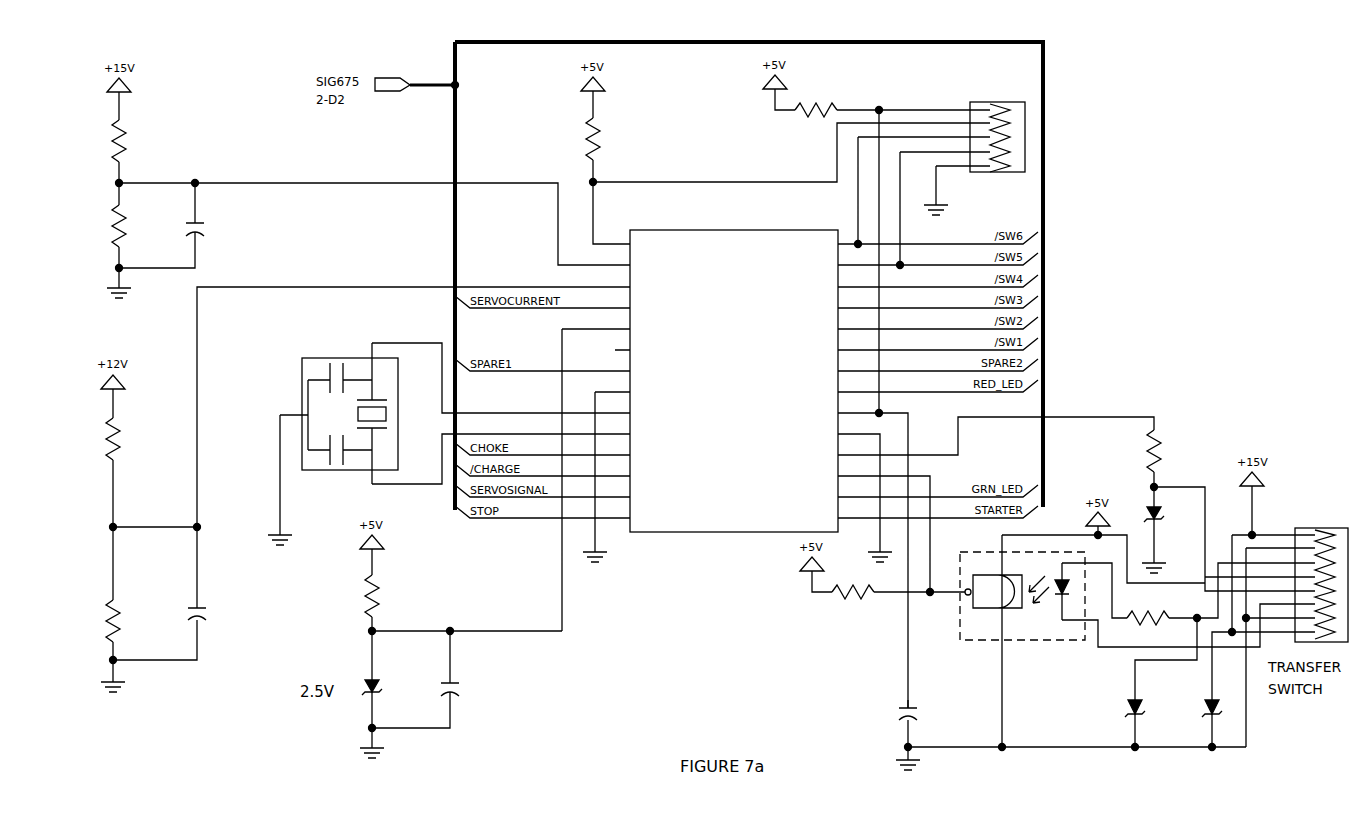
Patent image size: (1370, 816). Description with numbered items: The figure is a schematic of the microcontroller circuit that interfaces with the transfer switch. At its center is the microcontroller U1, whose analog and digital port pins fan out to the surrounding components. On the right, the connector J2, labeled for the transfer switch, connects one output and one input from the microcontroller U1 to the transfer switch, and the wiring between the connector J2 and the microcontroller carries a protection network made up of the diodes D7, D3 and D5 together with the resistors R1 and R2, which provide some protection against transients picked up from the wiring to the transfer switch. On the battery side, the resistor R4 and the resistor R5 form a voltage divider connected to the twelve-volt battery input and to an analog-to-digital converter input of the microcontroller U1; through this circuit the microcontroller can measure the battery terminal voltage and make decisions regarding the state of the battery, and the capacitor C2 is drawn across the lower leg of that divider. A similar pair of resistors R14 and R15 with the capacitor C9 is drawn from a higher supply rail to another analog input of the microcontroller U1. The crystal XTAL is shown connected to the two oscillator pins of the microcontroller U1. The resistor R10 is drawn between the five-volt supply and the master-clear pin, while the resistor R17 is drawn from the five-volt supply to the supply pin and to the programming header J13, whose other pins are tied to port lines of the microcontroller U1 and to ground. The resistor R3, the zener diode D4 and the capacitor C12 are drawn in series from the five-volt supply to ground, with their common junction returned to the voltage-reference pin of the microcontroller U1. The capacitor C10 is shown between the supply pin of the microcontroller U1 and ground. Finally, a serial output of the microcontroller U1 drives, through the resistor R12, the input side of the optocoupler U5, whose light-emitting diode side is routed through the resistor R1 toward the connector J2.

The resistor R14 is at (109, 141).
The resistor R15 is at (109, 226).
The capacitor C9 is at (187, 209).
The resistor R4 is at (103, 439).
The resistor R5 is at (103, 621).
The capacitor C2 is at (189, 573).
The crystal oscillator XTAL is at (351, 413).
The resistor R10 is at (584, 139).
The resistor R17 is at (816, 105).
The ICSP connector J13 is at (996, 134).
The microcontroller U1 is at (734, 369).
The resistor R3 is at (363, 596).
The zener diode D4 is at (364, 697).
The capacitor C12 is at (442, 665).
The resistor R12 is at (853, 586).
The capacitor C10 is at (900, 723).
The optocoupler U5 is at (1018, 609).
The resistor R1 is at (1148, 612).
The resistor R2 is at (1145, 451).
The diode D5 is at (1147, 518).
The diode D7 is at (1128, 721).
The diode D3 is at (1205, 721).
The connector J2 is at (1321, 575).